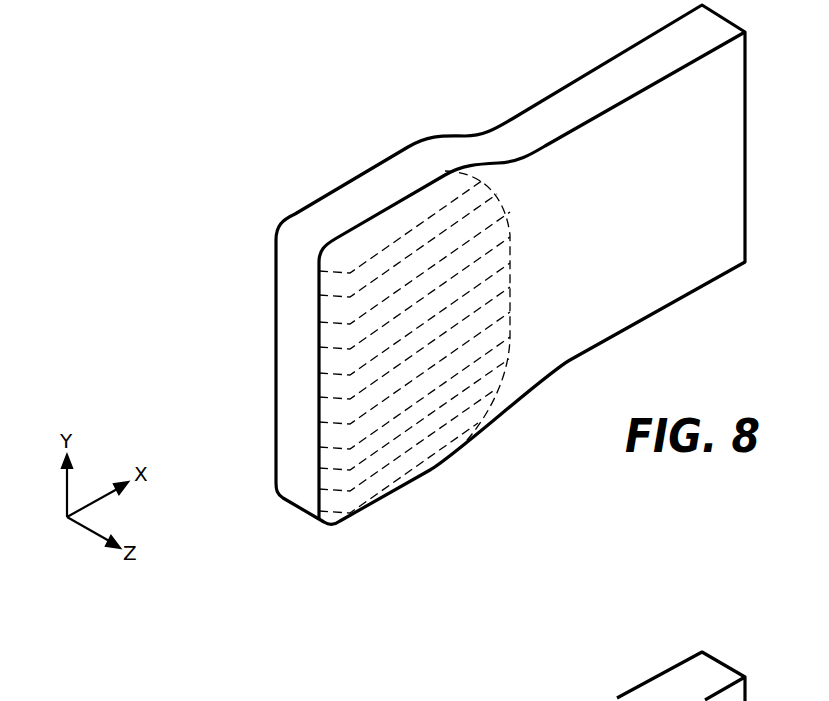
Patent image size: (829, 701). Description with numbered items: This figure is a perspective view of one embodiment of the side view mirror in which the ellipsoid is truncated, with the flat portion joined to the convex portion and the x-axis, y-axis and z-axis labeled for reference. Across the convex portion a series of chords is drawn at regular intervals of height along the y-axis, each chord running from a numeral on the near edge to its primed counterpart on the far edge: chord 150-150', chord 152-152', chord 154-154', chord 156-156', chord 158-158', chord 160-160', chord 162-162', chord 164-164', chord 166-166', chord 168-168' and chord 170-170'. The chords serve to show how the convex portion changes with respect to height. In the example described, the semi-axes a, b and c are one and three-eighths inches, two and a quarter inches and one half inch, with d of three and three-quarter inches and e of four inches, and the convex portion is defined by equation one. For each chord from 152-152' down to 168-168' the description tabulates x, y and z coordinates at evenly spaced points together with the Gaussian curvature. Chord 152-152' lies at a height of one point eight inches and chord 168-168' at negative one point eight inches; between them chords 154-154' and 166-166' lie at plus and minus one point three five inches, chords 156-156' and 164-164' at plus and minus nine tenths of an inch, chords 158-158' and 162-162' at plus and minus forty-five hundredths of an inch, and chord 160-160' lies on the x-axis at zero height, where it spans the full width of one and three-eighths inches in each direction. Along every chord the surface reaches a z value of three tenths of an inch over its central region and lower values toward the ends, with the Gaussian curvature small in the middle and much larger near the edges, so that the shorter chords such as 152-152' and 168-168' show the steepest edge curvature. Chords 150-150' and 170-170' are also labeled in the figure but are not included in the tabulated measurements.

The first layer 150 is at (350, 169).
The chord endpoint 152 is at (378, 179).
The chord endpoint 154 is at (396, 234).
The chord endpoint 156 is at (396, 263).
The chord endpoint 158 is at (396, 293).
The chord endpoint 160 is at (396, 322).
The chord endpoint 162 is at (396, 355).
The chord endpoint 164 is at (396, 390).
The chord endpoint 166 is at (397, 429).
The chord endpoint 168 is at (390, 462).
The eleventh layer 170 is at (389, 496).
The first layer end 150' is at (407, 169).
The chord endpoint 152' is at (435, 179).
The chord endpoint 154' is at (453, 234).
The chord endpoint 156' is at (453, 263).
The chord endpoint 158' is at (453, 293).
The chord endpoint 160' is at (453, 322).
The chord endpoint 162' is at (453, 352).
The chord endpoint 164' is at (453, 382).
The chord endpoint 166' is at (454, 414).
The chord endpoint 168' is at (447, 440).
The eleventh layer end 170' is at (446, 468).